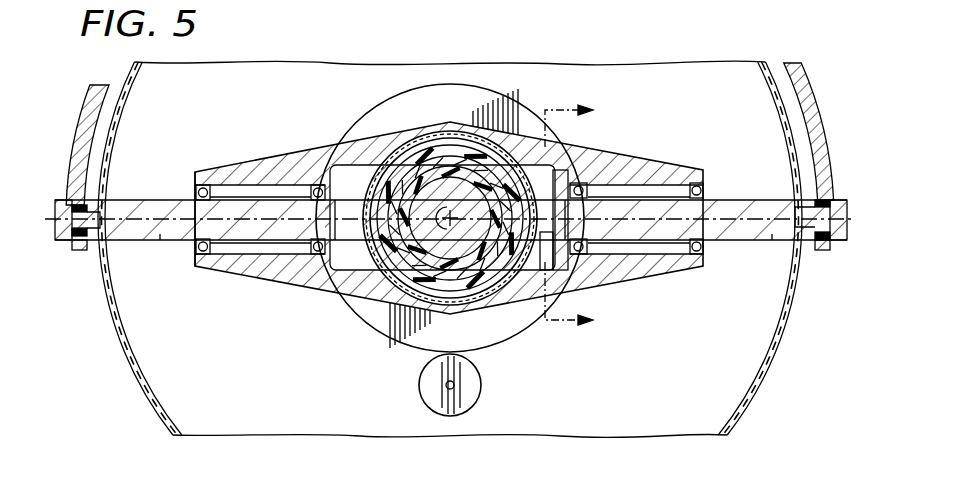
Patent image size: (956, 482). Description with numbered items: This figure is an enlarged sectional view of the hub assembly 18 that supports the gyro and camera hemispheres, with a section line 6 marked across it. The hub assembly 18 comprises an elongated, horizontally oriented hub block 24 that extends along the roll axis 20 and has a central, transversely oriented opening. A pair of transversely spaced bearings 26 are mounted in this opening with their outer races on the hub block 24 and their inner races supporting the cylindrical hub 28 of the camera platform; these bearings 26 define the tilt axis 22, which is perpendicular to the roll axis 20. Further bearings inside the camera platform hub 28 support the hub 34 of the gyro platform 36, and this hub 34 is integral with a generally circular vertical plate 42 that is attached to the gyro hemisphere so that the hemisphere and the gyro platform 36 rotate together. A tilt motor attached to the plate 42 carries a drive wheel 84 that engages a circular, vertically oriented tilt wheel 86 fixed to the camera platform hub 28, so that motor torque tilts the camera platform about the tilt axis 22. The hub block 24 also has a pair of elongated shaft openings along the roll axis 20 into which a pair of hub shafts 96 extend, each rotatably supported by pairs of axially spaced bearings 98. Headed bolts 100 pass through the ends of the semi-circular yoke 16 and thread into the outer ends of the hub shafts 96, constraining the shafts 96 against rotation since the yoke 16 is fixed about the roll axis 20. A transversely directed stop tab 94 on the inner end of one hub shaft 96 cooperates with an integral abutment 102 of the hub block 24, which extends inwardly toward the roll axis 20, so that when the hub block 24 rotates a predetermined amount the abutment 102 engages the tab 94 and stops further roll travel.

The semi-circular yoke 16 is at (801, 85).
The hub assembly 18 is at (255, 159).
The roll axis 20 is at (736, 210).
The tilt axis 22 is at (449, 226).
The hub block 24 is at (217, 169).
The bearings 26 is at (496, 146).
The cylindrical hub of camera platform 28 is at (436, 160).
The hub of gyro platform 34 is at (418, 176).
The gyro platform 36 is at (226, 358).
The circular vertical plate 42 is at (692, 74).
The drive wheel 84 is at (482, 391).
The tilt wheel 86 is at (384, 331).
The stop tab 94 is at (561, 170).
The hub shafts 96 is at (164, 241).
The bearings 98 is at (589, 180).
The headed bolts 100 is at (64, 200).
The abutment 102 is at (556, 272).
The section line 6- 6 is at (581, 223).